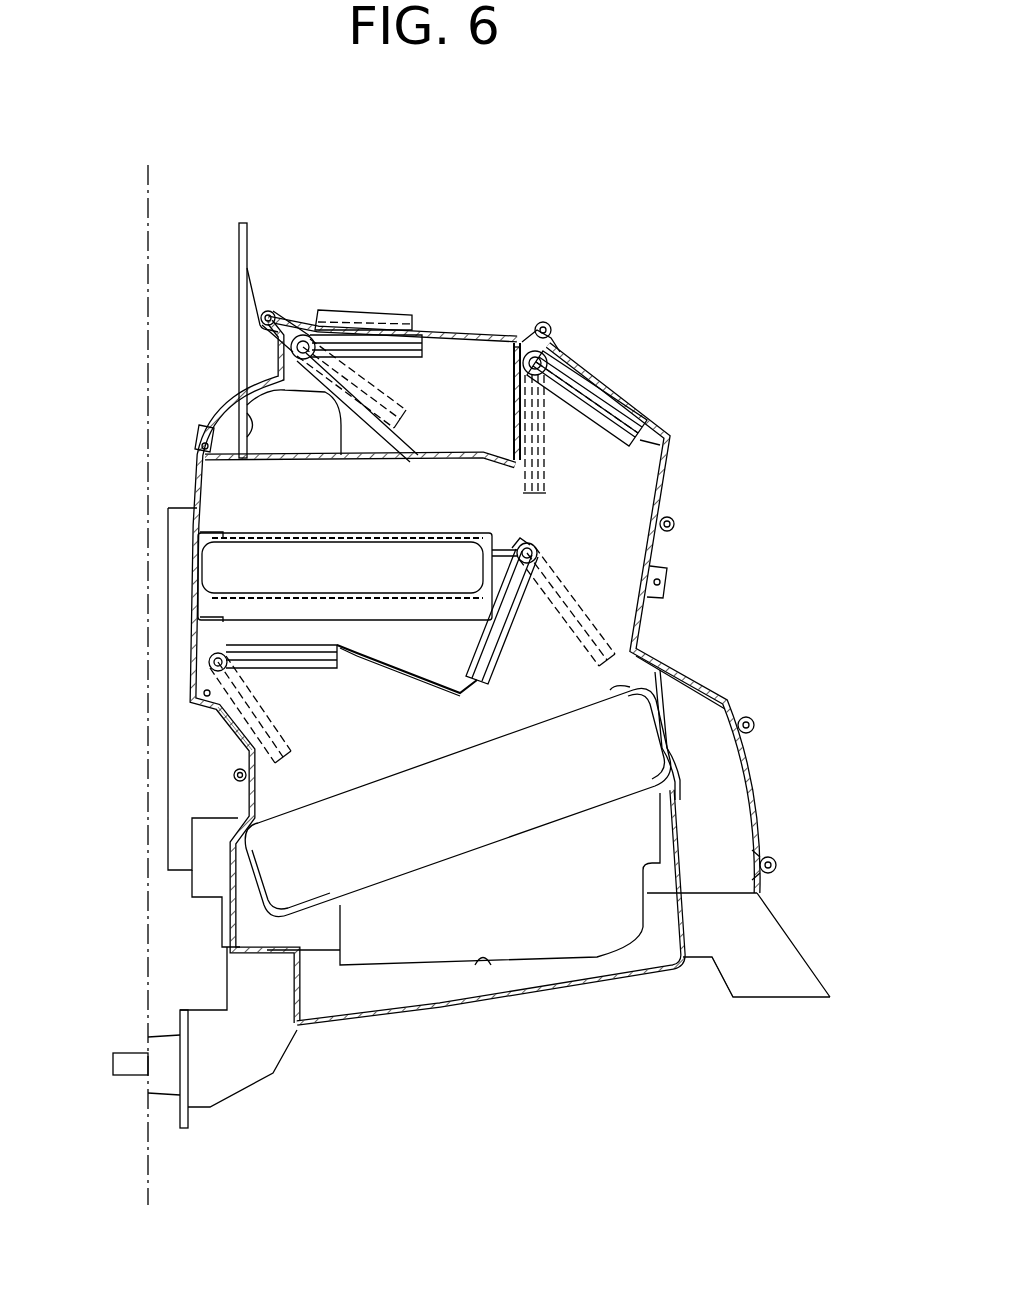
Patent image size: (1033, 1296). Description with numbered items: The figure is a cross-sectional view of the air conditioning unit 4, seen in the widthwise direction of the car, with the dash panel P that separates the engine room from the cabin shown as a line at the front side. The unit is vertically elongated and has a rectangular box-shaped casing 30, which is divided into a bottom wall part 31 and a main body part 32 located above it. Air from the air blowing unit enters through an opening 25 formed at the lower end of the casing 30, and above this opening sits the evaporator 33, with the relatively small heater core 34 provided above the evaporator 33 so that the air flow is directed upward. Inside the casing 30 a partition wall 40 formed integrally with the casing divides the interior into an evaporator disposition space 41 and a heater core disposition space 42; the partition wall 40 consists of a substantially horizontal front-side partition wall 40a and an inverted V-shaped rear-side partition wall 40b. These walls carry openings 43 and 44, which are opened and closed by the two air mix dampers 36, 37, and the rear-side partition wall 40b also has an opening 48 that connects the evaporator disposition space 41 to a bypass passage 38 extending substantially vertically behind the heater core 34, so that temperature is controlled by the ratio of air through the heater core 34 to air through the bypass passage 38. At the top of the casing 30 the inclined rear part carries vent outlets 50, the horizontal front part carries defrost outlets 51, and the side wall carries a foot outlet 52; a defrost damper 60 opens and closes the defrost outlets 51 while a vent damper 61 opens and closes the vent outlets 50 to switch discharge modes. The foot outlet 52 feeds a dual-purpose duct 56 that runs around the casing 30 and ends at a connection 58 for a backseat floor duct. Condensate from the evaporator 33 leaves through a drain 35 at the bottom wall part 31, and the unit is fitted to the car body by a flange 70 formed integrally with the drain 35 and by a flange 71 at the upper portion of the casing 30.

The air conditioning unit 4 is at (205, 78).
The dash panel P is at (145, 212).
The flange 71 is at (238, 243).
The defrost outlet 51 is at (343, 313).
The defrost damper 60 is at (440, 328).
The vent outlet 50 is at (627, 413).
The foot outlet 52 is at (233, 437).
The vent damper 61 is at (640, 452).
The bypass passage 38 is at (610, 522).
The rear-side partition wall 40b is at (535, 540).
The heater core 34 is at (245, 573).
The opening 48 is at (613, 610).
The opening 43 is at (262, 633).
The heater core disposition space 42 is at (450, 665).
The air mix damper 37 is at (505, 645).
The evaporator 33 is at (637, 747).
The front-side partition wall 40a is at (393, 670).
The opening 44 is at (490, 670).
The air mix damper 36 is at (228, 748).
The evaporator disposition space 41 is at (355, 775).
The partition wall 40 is at (460, 693).
The duct 56 is at (720, 800).
The casing 30 is at (232, 770).
The main body part 32 is at (222, 905).
The bottom wall part 31 is at (227, 992).
The flange 70 is at (172, 1125).
The drain 35 is at (125, 1077).
The opening 25 is at (483, 960).
The connection 58 is at (722, 983).